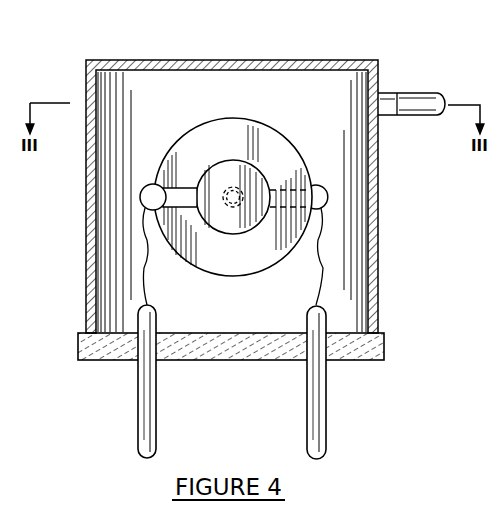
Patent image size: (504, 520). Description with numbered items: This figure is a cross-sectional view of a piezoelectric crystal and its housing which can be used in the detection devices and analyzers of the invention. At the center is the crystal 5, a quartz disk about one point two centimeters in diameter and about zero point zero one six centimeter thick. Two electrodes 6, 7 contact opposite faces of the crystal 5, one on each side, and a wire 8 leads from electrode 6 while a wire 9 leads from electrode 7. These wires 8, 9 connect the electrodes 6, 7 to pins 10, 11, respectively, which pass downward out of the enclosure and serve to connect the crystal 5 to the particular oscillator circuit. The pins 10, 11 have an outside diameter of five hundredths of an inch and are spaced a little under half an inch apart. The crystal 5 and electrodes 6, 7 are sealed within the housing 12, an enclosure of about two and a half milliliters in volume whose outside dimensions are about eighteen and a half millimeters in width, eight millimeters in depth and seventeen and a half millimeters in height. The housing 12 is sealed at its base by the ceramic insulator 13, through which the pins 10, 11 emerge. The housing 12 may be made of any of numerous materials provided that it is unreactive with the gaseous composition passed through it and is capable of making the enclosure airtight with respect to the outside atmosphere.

The crystal 5 is at (263, 130).
The electrode 6 is at (150, 186).
The electrode 7 is at (320, 186).
The wire 8 is at (147, 276).
The wire 9 is at (319, 280).
The pin 10 is at (157, 397).
The pin 11 is at (327, 398).
The housing 12 is at (287, 61).
The ceramic insulator 13 is at (251, 353).